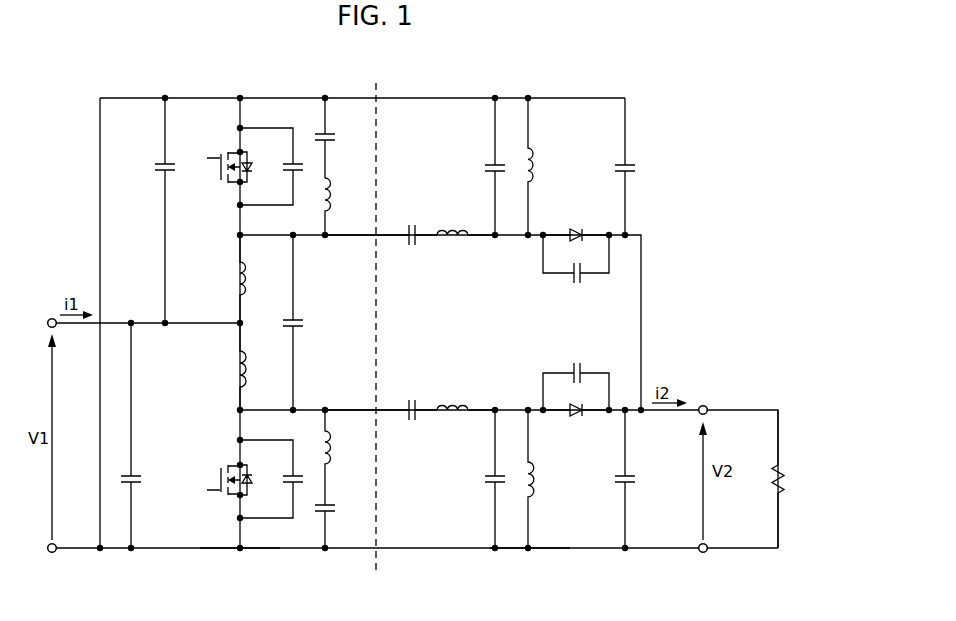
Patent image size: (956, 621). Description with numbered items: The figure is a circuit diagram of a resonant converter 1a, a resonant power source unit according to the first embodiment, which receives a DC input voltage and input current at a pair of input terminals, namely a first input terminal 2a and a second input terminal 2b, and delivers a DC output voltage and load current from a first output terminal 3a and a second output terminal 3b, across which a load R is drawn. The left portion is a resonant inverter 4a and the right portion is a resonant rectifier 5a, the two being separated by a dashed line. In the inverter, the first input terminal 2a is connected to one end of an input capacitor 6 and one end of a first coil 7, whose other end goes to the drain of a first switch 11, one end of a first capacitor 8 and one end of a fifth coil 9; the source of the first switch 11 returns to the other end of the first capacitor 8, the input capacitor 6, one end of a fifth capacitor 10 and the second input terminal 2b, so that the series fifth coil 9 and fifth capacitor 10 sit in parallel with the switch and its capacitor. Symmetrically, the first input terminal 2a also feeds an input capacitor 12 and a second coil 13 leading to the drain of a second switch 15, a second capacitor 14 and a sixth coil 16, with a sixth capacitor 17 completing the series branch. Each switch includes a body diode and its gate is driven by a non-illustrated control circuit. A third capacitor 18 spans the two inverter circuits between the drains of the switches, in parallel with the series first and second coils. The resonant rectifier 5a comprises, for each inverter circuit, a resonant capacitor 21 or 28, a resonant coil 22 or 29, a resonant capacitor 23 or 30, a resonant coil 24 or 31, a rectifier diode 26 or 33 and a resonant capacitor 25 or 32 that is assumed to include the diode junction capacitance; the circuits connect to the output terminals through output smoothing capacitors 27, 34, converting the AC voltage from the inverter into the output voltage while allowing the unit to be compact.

The resonant converter 1a is at (399, 83).
The first input terminal 2a is at (52, 318).
The second input terminal 2b is at (51, 554).
The first output terminal 3a is at (706, 405).
The second output terminal 3b is at (704, 554).
The resonant inverter 4a is at (241, 565).
The resonant rectifier 5a is at (535, 565).
The input capacitor 6 is at (143, 479).
The first coil 7 is at (249, 367).
The first capacitor 8 is at (283, 475).
The fifth coil 9 is at (334, 447).
The fifth capacitor 10 is at (336, 508).
The first switch 11 is at (222, 464).
The input capacitor 12 is at (152, 166).
The second coil 13 is at (249, 280).
The second capacitor 14 is at (283, 166).
The second switch 15 is at (222, 154).
The sixth coil 16 is at (332, 195).
The sixth capacitor 17 is at (336, 137).
The third capacitor 18 is at (304, 323).
The resonant capacitor 21 is at (412, 400).
The resonant coil 22 is at (453, 400).
The resonant capacitor 23 is at (505, 483).
The resonant coil 24 is at (535, 478).
The resonant capacitor 25 is at (577, 366).
The rectifier diode 26 is at (577, 418).
The output smoothing capacitor 27 is at (636, 478).
The resonant capacitor 28 is at (412, 248).
The resonant coil 29 is at (453, 242).
The resonant capacitor 30 is at (505, 170).
The resonant coil 31 is at (535, 165).
The resonant capacitor 32 is at (577, 284).
The rectifier diode 33 is at (578, 228).
The output smoothing capacitor 34 is at (636, 165).
The load resistor R is at (785, 479).